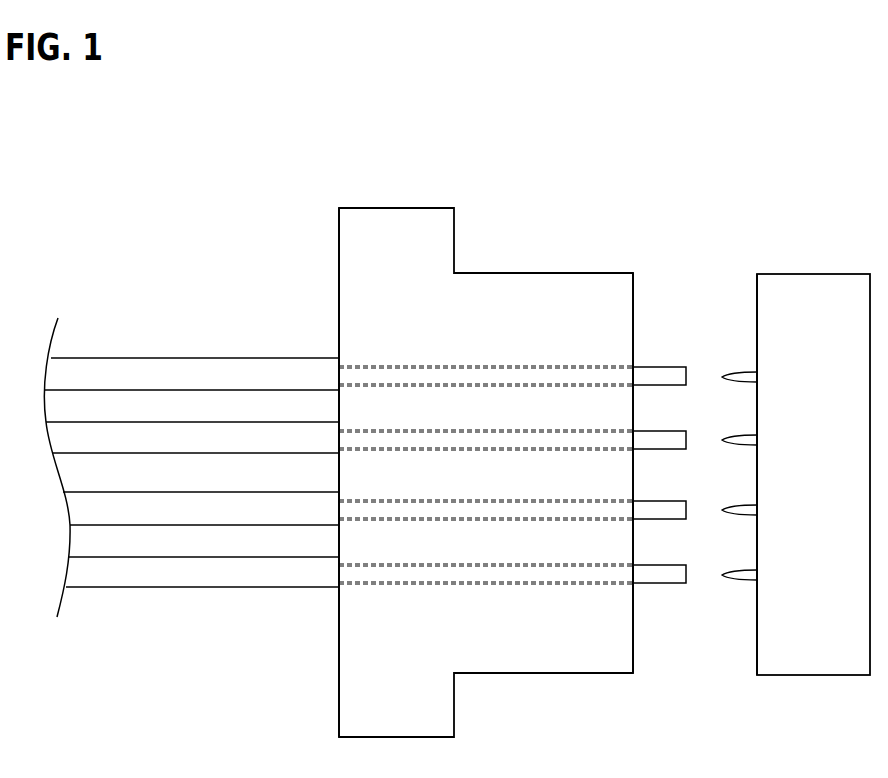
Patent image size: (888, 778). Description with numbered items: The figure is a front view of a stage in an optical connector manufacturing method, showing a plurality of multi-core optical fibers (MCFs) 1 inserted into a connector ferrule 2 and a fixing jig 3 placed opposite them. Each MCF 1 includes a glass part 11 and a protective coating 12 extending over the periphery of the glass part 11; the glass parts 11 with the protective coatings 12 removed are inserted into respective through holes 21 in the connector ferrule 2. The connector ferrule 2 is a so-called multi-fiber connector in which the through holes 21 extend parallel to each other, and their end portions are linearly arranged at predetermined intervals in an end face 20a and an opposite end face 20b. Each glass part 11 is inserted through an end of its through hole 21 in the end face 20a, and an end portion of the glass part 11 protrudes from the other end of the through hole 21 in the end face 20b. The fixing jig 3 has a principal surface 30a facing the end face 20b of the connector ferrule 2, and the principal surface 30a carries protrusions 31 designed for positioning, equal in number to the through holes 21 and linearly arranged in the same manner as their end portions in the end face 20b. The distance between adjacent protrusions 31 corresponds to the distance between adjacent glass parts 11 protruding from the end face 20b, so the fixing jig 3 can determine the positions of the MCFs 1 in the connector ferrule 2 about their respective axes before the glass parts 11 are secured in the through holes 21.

The optical fibers (MCFs) 1 is at (191, 448).
The protective coating 12 is at (191, 344).
The connector ferrule 2 is at (486, 425).
The end face 20a is at (338, 237).
The end face 20b is at (633, 307).
The through holes 21 is at (528, 370).
The glass part 11 is at (660, 367).
The fixing jig 3 is at (782, 431).
The principal surface 30a is at (757, 308).
The protrusions 31 is at (725, 513).